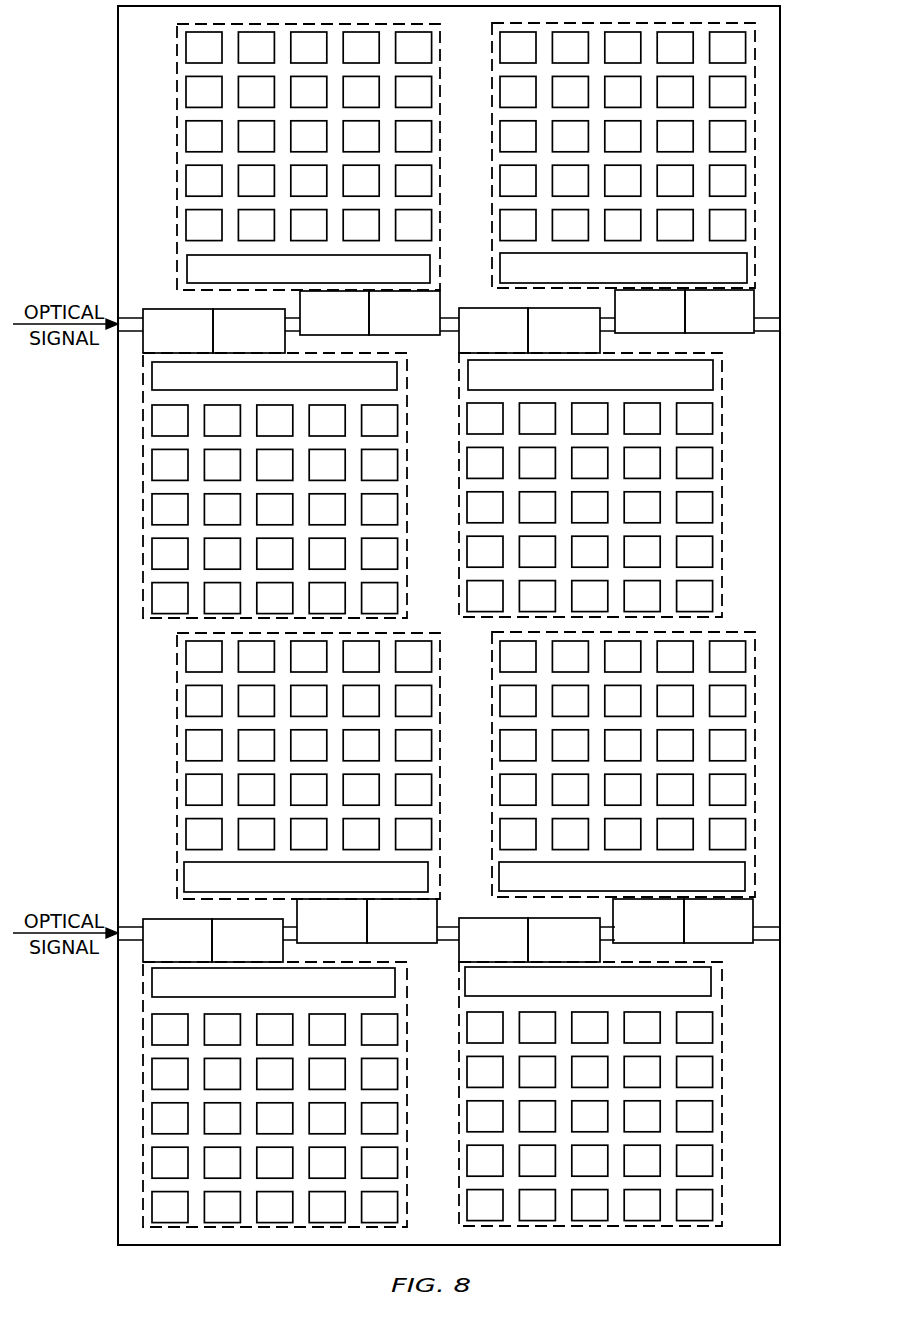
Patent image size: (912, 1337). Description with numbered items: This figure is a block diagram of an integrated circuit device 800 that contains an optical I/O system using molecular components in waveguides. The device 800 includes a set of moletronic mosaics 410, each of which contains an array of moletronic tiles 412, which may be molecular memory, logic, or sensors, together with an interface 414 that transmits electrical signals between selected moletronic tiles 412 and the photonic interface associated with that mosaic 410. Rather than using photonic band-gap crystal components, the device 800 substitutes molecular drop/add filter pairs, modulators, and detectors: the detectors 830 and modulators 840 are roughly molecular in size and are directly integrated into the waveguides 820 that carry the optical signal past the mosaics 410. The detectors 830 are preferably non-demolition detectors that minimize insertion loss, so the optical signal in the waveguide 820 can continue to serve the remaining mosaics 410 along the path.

The device 800 is at (733, 985).
The moletronic mosaic 410 is at (177, 62).
The moletronic tile 412 is at (195, 227).
The interface 414 is at (292, 280).
The waveguide 820 is at (133, 317).
The detector 830 is at (162, 343).
The modulator 840 is at (233, 343).